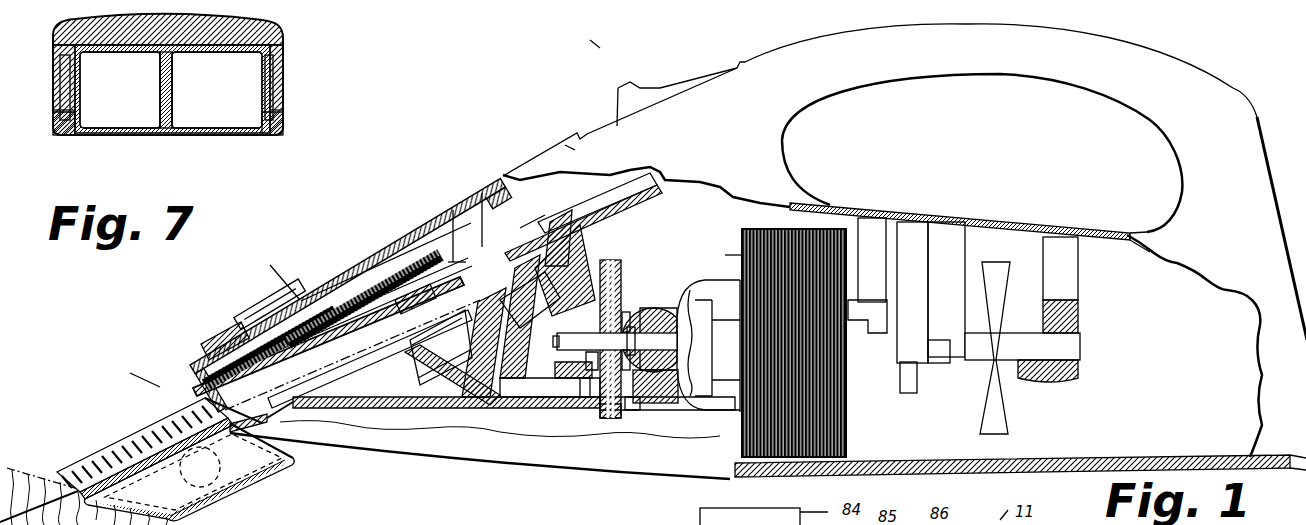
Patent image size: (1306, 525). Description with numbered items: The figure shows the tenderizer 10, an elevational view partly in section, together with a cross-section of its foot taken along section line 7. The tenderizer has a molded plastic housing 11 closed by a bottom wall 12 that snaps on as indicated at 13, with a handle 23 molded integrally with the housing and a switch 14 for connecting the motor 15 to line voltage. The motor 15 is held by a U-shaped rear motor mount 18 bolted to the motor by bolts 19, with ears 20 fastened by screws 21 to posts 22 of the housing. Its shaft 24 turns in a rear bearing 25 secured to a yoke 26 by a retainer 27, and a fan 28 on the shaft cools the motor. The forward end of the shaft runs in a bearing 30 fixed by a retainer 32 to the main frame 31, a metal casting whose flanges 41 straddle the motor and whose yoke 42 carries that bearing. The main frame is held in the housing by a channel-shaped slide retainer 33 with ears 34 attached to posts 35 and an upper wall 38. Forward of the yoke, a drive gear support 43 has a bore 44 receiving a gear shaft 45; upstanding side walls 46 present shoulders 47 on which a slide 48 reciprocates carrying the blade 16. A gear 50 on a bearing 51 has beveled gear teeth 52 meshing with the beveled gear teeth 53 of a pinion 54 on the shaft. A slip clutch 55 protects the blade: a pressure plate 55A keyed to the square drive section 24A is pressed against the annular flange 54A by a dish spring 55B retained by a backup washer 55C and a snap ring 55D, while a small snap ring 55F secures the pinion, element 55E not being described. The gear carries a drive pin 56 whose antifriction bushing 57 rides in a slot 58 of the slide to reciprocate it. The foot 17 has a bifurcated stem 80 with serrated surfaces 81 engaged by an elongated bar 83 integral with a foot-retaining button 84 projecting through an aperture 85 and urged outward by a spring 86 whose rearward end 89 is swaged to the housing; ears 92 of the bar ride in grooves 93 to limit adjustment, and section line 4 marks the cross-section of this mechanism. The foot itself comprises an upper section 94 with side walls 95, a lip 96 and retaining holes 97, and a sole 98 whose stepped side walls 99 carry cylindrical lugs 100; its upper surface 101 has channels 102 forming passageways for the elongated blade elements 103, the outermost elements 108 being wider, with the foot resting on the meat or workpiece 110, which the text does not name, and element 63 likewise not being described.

In FIG. 1, the tenderizer 10 is at (598, 45).
In FIG. 1, the molded plastic housing 11 is at (575, 150).
In FIG. 1, the bottom wall 12 is at (497, 462).
In FIG. 1, the snap connection 13 is at (235, 336).
In FIG. 1, the switch 14 is at (642, 92).
In FIG. 1, the motor 15 is at (735, 252).
In FIG. 7, the tenderizing blade 16 is at (118, 56).
In FIG. 7, the foot 17 is at (300, 27).
In FIG. 1, the foot 17 is at (78, 445).
In FIG. 1, the rear motor mount 18 is at (852, 410).
In FIG. 1, the bolts 19 is at (897, 345).
In FIG. 1, the ears 20 is at (885, 320).
In FIG. 1, the screws 21 is at (866, 302).
In FIG. 1, the posts 22 is at (888, 202).
In FIG. 1, the handle 23 is at (1021, 182).
In FIG. 1, the shaft 24 is at (655, 316).
In FIG. 1, the square drive section 24A is at (615, 341).
In FIG. 1, the rear bearing 25 is at (1082, 324).
In FIG. 1, the yoke 26 is at (1082, 282).
In FIG. 1, the retainer 27 is at (1052, 382).
In FIG. 1, the fan 28 is at (1000, 437).
In FIG. 1, the bearing 30 is at (692, 326).
In FIG. 1, the main frame 31 is at (443, 430).
In FIG. 1, the retainer 32 is at (708, 335).
In FIG. 1, the channel-shaped slide retainer 33 is at (570, 185).
In FIG. 1, the ears 34 is at (522, 215).
In FIG. 1, the posts 35 is at (470, 205).
In FIG. 1, the upper wall 38 is at (560, 215).
In FIG. 1, the flanges 41 is at (728, 350).
In FIG. 1, the yoke 42 is at (616, 416).
In FIG. 1, the drive gear support 43 is at (532, 385).
In FIG. 1, the bore 44 is at (556, 390).
In FIG. 1, the gear shaft 45 is at (575, 380).
In FIG. 1, the upstanding side walls 46 is at (405, 400).
In FIG. 1, the shoulders 47 is at (284, 397).
In FIG. 1, the slide 48 is at (665, 183).
In FIG. 1, the gear 50 is at (612, 328).
In FIG. 1, the bearing 51 is at (530, 300).
In FIG. 1, the beveled gear teeth 52 is at (455, 412).
In FIG. 1, the beveled gear teeth 53 is at (580, 400).
In FIG. 1, the pinion 54 is at (588, 372).
In FIG. 1, the annular flange 54A is at (602, 412).
In FIG. 1, the slip clutch 55 is at (638, 290).
In FIG. 1, the pressure plate 55A is at (628, 412).
In FIG. 1, the dish spring 55B is at (628, 312).
In FIG. 1, the backup washer 55C is at (634, 300).
In FIG. 1, the snap ring 55D is at (653, 355).
In FIG. 1, the clutch arm 55E is at (480, 322).
In FIG. 1, the small snap ring 55F is at (480, 340).
In FIG. 1, the drive pin 56 is at (596, 262).
In FIG. 1, the antifriction bushing 57 is at (549, 233).
In FIG. 1, the slot 58 is at (636, 204).
In FIG. 1, the slide block 63 is at (433, 347).
In FIG. 1, the bifurcated stem 80 is at (434, 228).
In FIG. 1, the serrated surfaces 81 is at (390, 262).
In FIG. 1, the elongated bar 83 is at (352, 282).
In FIG. 1, the foot-retaining button 84 is at (283, 290).
In FIG. 1, the aperture 85 is at (300, 278).
In FIG. 1, the spring 86 is at (328, 245).
In FIG. 1, the rearward end 89 is at (418, 200).
In FIG. 1, the ears 92 is at (355, 352).
In FIG. 1, the grooves 93 is at (372, 215).
In FIG. 7, the upper section 94 is at (215, 27).
In FIG. 7, the side walls 95 is at (62, 130).
In FIG. 7, the lip 96 is at (56, 112).
In FIG. 1, the lip 96 is at (245, 500).
In FIG. 7, the retaining hole 97 is at (55, 77).
In FIG. 1, the retaining hole 97 is at (250, 480).
In FIG. 7, the sole 98 is at (163, 134).
In FIG. 7, the stepped side walls 99 is at (90, 100).
In FIG. 7, the cylindrical lugs 100 is at (60, 88).
In FIG. 7, the upper surface 101 is at (175, 35).
In FIG. 1, the upper surface 101 is at (128, 470).
In FIG. 7, the channels 102 is at (176, 62).
In FIG. 7, the elongated blade elements 103 is at (135, 15).
In FIG. 7, the outermost elements 108 is at (70, 22).
In FIG. 1, the workpiece 110 is at (54, 463).
In FIG. 1, the section line 4- 4 is at (290, 268).
In FIG. 1, the section line 7- 7 is at (135, 385).